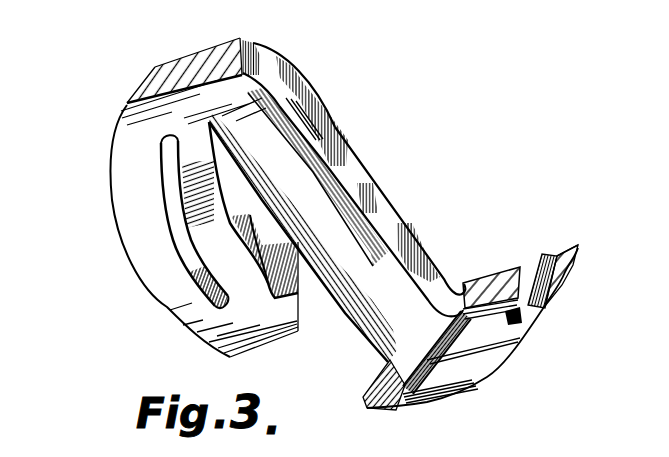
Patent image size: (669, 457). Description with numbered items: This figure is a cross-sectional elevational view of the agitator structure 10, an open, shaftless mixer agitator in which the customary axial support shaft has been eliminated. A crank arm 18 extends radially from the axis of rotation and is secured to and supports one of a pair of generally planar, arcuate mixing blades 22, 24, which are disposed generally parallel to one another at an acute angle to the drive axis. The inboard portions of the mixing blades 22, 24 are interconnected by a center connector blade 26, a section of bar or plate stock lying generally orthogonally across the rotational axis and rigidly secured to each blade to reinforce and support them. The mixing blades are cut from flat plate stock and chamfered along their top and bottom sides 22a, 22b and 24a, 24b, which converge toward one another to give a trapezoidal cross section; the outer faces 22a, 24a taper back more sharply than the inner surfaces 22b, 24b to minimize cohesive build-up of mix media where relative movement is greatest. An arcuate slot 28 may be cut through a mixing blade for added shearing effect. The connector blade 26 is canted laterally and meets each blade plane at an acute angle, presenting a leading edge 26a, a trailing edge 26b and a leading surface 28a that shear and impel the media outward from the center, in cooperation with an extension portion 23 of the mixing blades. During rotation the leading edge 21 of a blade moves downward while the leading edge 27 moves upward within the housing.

The agitator structure 10 is at (366, 111).
The crank arm 18 is at (303, 283).
The leading edge 21 is at (578, 246).
The mixing blade 22 is at (472, 360).
The top side of mixing blade 22a is at (575, 251).
The bottom side of mixing blade 22b is at (452, 287).
The extension portion 23 is at (382, 383).
The mixing blade 24 is at (126, 218).
The top side of mixing blade 24a is at (133, 101).
The bottom side of mixing blade 24b is at (247, 53).
The connector blade 26 is at (371, 208).
The leading edge of connector blade 26a is at (427, 247).
The trailing edge of connector blade 26b is at (373, 266).
The leading edge 27 is at (127, 105).
The slot 28 is at (193, 270).
The leading surface of connector blade 28a is at (297, 98).